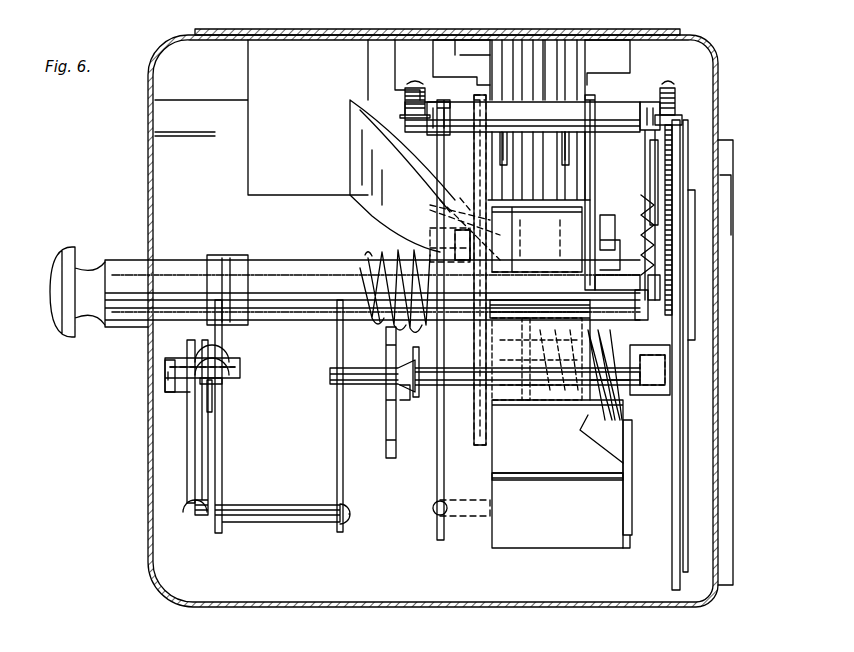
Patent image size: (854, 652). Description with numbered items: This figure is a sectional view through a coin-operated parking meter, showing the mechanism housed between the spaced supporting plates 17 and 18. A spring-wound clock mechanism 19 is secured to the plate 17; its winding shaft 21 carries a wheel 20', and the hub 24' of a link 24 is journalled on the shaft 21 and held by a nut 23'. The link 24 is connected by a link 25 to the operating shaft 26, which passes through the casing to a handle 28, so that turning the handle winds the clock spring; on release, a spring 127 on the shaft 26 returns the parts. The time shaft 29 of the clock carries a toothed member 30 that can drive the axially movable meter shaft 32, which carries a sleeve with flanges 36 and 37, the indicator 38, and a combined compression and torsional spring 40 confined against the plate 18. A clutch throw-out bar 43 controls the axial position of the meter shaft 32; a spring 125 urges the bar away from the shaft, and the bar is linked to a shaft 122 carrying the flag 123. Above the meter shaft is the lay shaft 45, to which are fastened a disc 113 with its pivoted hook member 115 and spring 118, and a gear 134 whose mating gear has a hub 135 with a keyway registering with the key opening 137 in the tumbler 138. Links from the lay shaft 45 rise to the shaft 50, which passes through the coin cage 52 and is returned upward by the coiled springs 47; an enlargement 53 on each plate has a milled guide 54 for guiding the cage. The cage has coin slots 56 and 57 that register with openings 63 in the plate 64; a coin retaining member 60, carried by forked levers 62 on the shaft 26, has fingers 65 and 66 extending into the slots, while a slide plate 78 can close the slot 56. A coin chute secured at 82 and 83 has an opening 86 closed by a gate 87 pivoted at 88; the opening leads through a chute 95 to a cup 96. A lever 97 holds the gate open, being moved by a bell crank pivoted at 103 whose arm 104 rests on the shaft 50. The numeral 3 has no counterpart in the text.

The sliding rod 3 is at (400, 386).
The supporting plate 17 is at (436, 480).
The supporting plate 18 is at (620, 494).
The clock mechanism 19 is at (224, 458).
The wheel 20' is at (225, 395).
The shaft 21 is at (225, 382).
The nut 23' is at (146, 393).
The link 24 is at (155, 421).
The hub 24' is at (200, 353).
The link 25 is at (200, 485).
The shaft 26 is at (172, 268).
The handle 28 is at (78, 335).
The time shaft 29 is at (345, 385).
The toothed member 30 is at (385, 440).
The meter shaft 32 is at (420, 390).
The flange 36 is at (472, 420).
The flange 37 is at (510, 430).
The indicator 38 is at (690, 452).
The combined compression and torsional spring 40 is at (610, 405).
The clutch throw-out bar 43 is at (640, 318).
The lay shaft 45 is at (432, 205).
The coiled springs 47 is at (670, 88).
The shaft 50 is at (675, 115).
The coin cage 52 is at (545, 45).
The enlargement 53 is at (405, 45).
The milled guide 54 is at (455, 42).
The coin slot 56 is at (492, 60).
The coin slot 57 is at (565, 78).
The coin retaining and actuating member 60 is at (642, 100).
The forked levers 62 is at (455, 185).
The openings 63 is at (518, 40).
The plate 64 is at (330, 36).
The finger 65 is at (503, 140).
The finger 66 is at (565, 142).
The slide plate 78 is at (495, 45).
The securing point 82 is at (440, 372).
The securing point 83 is at (460, 512).
The opening 86 is at (520, 266).
The gate 87 is at (538, 250).
The pivot 88 is at (550, 345).
The chute 95 is at (365, 197).
The cup 96 is at (250, 133).
The lever 97 is at (500, 342).
The pivot 103 is at (432, 228).
The arm 104 is at (440, 168).
The disc 113 is at (662, 290).
The hook member 115 is at (660, 150).
The spring 118 is at (660, 240).
The shaft 122 is at (672, 372).
The flag 123 is at (682, 345).
The spring 125 is at (635, 536).
The spring 127 is at (372, 262).
The gear 134 is at (675, 128).
The hub 135 is at (680, 188).
The key opening 137 is at (733, 210).
The tumbler 138 is at (735, 178).